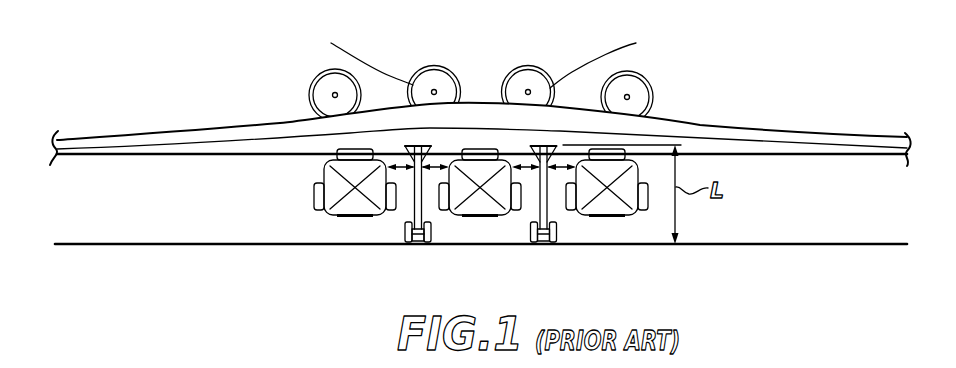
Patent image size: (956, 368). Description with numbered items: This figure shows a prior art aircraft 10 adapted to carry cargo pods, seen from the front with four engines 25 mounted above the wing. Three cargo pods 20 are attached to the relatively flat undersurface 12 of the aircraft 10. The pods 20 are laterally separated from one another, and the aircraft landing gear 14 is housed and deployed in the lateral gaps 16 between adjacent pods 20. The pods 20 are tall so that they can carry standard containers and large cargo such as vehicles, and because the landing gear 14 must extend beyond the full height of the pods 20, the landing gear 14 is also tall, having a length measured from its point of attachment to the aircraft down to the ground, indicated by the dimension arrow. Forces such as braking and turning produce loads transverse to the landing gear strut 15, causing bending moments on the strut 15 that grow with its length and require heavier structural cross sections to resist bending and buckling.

The aircraft 10 is at (724, 49).
The undersurface 12 is at (202, 172).
The landing gear 14 is at (484, 216).
The landing gear strut 15 is at (424, 197).
The lateral gaps 16 is at (408, 162).
The cargo pods 20 is at (355, 216).
The engines 25 is at (324, 75).